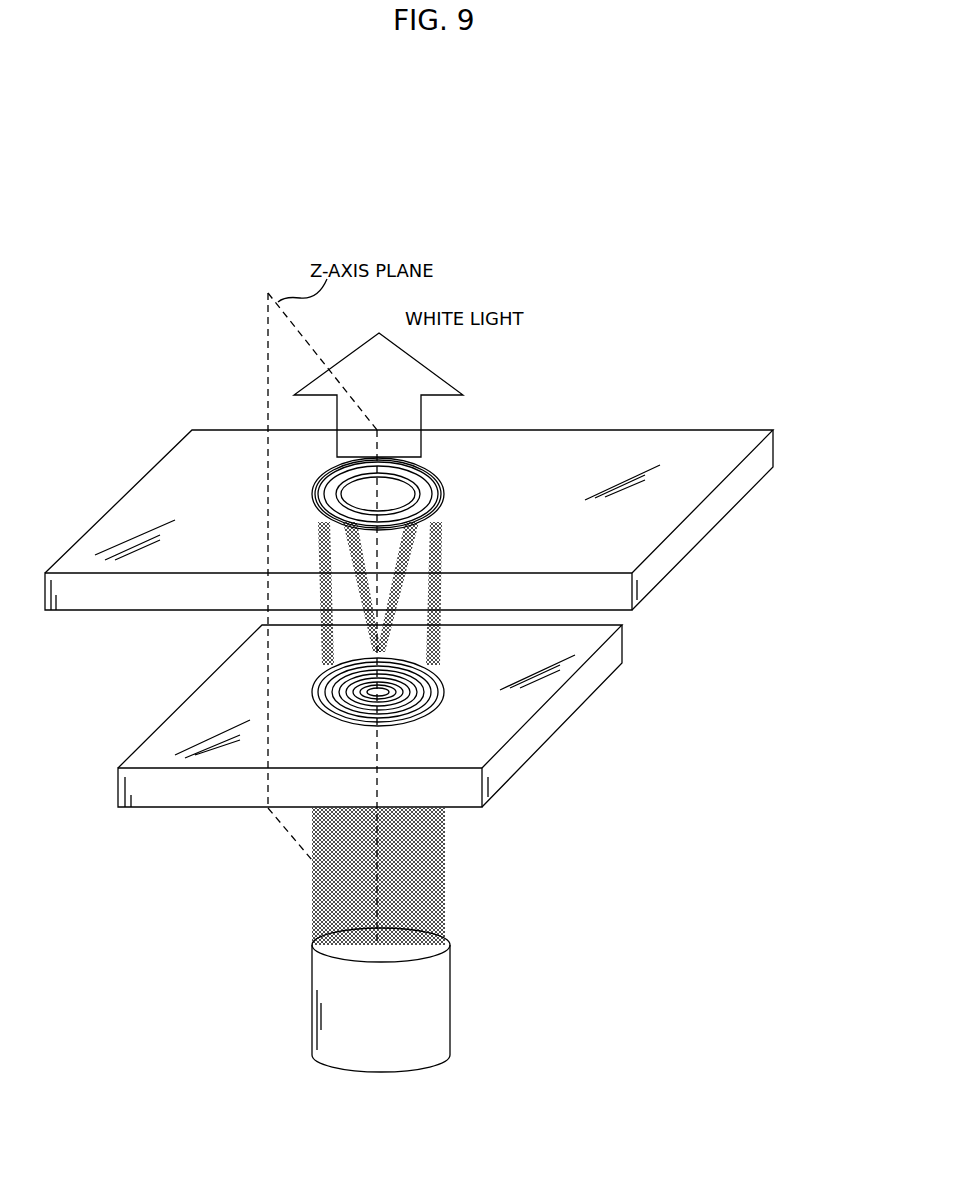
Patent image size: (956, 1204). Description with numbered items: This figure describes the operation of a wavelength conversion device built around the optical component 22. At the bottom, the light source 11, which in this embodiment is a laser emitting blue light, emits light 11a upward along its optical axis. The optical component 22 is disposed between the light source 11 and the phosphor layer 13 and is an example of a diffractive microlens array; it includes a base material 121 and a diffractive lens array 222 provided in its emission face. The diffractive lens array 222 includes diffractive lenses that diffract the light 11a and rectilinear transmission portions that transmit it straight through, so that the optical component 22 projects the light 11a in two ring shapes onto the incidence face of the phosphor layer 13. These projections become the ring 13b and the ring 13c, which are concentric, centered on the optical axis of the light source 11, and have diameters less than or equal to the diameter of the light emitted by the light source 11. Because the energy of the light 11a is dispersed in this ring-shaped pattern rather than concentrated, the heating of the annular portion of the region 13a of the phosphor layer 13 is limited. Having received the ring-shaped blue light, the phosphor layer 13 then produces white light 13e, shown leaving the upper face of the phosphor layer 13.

The light source 11 is at (430, 982).
The light 11a is at (443, 883).
The phosphor layer 13 is at (737, 488).
The region 13a is at (445, 497).
The ring 13b is at (338, 495).
The ring 13c is at (320, 470).
The white light 13e is at (447, 380).
The optical component 22 is at (429, 716).
The base material 121 is at (595, 675).
The diffractive lens array 222 is at (445, 695).